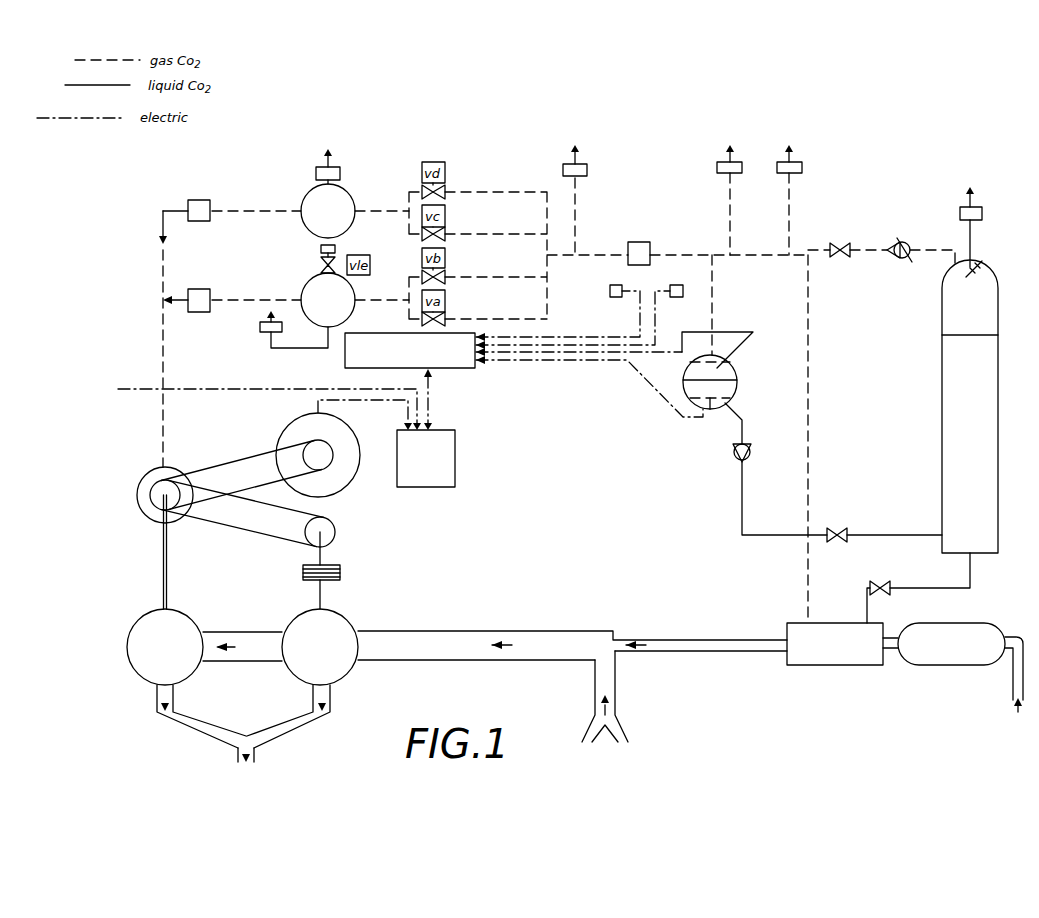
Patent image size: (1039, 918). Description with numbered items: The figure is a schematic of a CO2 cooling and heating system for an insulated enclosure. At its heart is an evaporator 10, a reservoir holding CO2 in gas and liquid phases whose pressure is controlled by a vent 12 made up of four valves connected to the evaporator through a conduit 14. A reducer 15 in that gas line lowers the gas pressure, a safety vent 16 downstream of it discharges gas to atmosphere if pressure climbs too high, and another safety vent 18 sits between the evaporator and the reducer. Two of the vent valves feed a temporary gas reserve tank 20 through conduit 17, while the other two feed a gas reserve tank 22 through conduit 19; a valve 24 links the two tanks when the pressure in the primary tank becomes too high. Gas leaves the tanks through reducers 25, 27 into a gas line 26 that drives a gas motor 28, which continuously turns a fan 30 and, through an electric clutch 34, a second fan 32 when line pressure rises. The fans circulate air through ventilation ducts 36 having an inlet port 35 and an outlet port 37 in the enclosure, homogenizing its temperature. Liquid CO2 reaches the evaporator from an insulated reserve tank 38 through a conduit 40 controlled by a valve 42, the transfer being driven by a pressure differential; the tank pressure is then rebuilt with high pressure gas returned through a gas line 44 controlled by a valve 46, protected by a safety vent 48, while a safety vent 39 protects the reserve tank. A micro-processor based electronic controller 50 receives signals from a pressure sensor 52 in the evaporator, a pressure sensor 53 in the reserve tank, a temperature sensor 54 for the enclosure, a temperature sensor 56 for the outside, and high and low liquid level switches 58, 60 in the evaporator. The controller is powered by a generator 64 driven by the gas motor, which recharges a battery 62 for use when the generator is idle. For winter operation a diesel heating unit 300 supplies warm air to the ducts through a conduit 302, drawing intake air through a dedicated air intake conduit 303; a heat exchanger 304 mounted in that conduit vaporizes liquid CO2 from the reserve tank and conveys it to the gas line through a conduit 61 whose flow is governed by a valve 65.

The evaporator 10 is at (737, 396).
The vent 12 is at (487, 136).
The conduit 14 is at (705, 248).
The reducer 15 is at (638, 242).
The safety vent 16 is at (583, 176).
The conduit 17 is at (392, 300).
The safety vent 18 is at (738, 170).
The conduit 19 is at (376, 211).
The temporary gas reserve tank 20 is at (307, 310).
The gas reserve tank 22 is at (328, 193).
The valve 24 is at (311, 257).
The reducer 25 is at (195, 290).
The gas line 26 is at (157, 262).
The reducer 27 is at (197, 199).
The gas motor 28 is at (140, 480).
The fan 30 is at (165, 647).
The fan 32 is at (320, 647).
The electric clutch 34 is at (338, 565).
The inlet port 35 is at (600, 718).
The ducts 36 is at (285, 725).
The outlet port 37 is at (258, 747).
The insulated reserve tank 38 is at (950, 406).
The safety vent 39 is at (978, 214).
The conduit 40 is at (787, 538).
The valve 42 is at (827, 540).
The gas line 44 is at (921, 257).
The valve 46 is at (841, 248).
The safety vent 48 is at (798, 170).
The electronic controller 50 is at (345, 352).
The pressure sensor 52 is at (733, 358).
The pressure sensor 53 is at (980, 263).
The temperature sensor 54 is at (614, 297).
The temperature sensor 56 is at (678, 297).
The high liquid level switch 58 is at (689, 356).
The low liquid level switch 60 is at (687, 417).
The conduit 61 is at (809, 385).
The battery 62 is at (286, 428).
The generator 64 is at (360, 468).
The valve 65 is at (886, 585).
The diesel heating unit 300 is at (968, 671).
The conduit 302 is at (686, 643).
The air intake conduit 303 is at (1012, 690).
The heat exchanger 304 is at (850, 671).